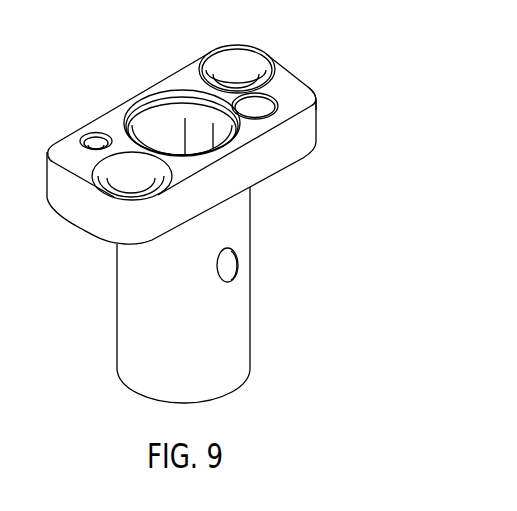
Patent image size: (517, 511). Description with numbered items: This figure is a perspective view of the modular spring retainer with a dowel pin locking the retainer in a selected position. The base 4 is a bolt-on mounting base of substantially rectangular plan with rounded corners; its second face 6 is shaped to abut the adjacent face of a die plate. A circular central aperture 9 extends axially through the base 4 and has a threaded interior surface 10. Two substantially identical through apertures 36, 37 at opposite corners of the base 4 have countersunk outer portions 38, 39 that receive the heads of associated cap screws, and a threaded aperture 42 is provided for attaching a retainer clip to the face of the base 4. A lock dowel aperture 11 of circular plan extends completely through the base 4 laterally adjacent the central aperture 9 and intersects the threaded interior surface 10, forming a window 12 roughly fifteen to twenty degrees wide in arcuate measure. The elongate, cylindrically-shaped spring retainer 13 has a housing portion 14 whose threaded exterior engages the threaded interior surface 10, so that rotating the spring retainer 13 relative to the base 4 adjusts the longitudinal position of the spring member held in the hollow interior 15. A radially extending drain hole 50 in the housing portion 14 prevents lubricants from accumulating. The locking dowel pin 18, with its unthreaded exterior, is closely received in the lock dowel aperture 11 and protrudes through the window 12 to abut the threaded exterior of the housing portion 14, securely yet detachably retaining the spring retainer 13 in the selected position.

The base 4 is at (47, 145).
The second face 6 is at (288, 164).
The central aperture 9 is at (133, 100).
The threaded interior surface 10 is at (157, 107).
The lock dowel aperture 11 is at (317, 100).
The window 12 is at (228, 153).
The spring retainer 13 is at (117, 290).
The housing portion 14 is at (235, 328).
The hollow interior 15 is at (193, 139).
The locking dowel pin 18 is at (262, 105).
The through aperture 36 is at (230, 85).
The through aperture 37 is at (130, 190).
The countersunk outer portion 38 is at (242, 62).
The countersunk outer portion 39 is at (158, 172).
The threaded aperture 42 is at (84, 137).
The drain hole 50 is at (232, 265).